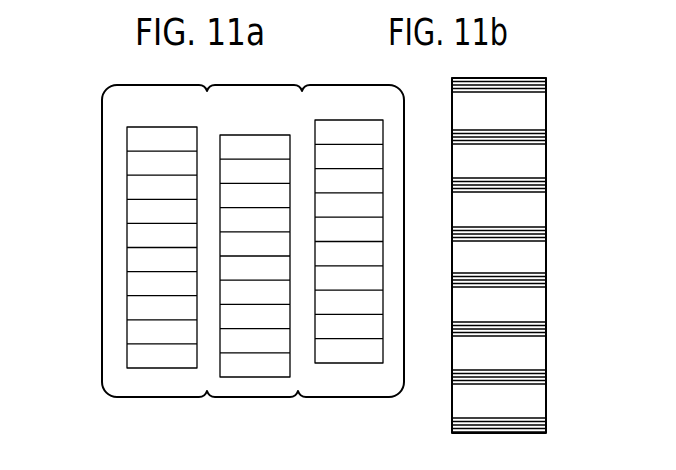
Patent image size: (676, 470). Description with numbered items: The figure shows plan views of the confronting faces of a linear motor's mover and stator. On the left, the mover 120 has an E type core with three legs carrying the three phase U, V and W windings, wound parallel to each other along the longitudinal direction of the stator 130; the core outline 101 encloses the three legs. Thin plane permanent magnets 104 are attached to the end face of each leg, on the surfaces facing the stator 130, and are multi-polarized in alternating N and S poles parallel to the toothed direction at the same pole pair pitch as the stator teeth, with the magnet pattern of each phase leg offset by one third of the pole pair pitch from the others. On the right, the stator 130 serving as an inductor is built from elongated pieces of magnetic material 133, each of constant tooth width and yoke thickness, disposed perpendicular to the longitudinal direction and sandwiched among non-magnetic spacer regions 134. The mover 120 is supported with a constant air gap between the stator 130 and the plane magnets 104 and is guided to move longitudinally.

In FIG. 11a, the stator core 101 is at (106, 103).
In FIG. 11a, the mover 120 is at (233, 262).
In FIG. 11a, the permanent magnets 104 is at (130, 353).
In FIG. 11b, the stator 130 is at (535, 255).
In FIG. 11b, the magnetic material 133 is at (543, 133).
In FIG. 11b, the spacer section 134 is at (537, 215).